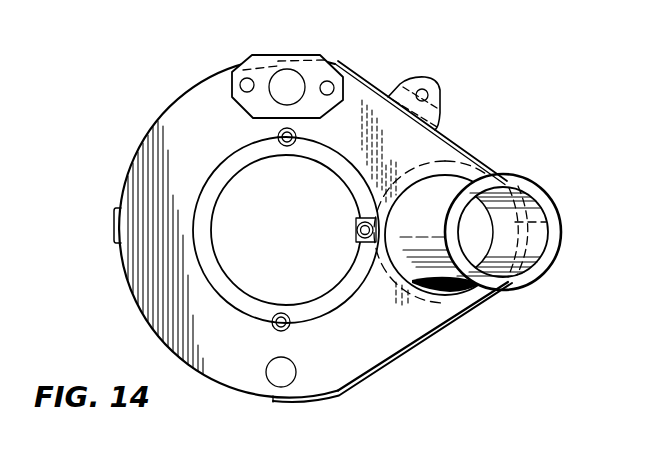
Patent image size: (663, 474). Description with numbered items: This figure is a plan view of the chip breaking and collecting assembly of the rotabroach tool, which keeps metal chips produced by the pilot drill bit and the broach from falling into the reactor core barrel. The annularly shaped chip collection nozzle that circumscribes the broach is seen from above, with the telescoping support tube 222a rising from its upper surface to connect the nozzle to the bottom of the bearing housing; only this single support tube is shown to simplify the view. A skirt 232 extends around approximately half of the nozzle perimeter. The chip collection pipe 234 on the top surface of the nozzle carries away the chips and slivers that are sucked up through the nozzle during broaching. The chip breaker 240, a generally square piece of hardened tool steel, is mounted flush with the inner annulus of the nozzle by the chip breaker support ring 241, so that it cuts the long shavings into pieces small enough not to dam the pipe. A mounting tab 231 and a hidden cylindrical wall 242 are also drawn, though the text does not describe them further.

The mounting bracket 222a is at (263, 60).
The mounting tab 231 is at (436, 80).
The flange plate 232 is at (340, 391).
The tubular outlet 234 is at (541, 268).
The bolt hole boss 240 is at (366, 215).
The annular ring 241 is at (233, 170).
The hidden cylindrical wall 242 is at (429, 255).